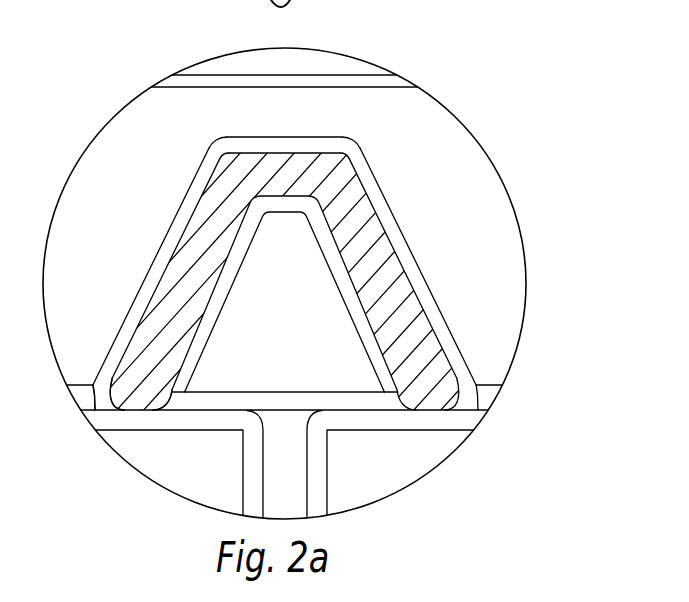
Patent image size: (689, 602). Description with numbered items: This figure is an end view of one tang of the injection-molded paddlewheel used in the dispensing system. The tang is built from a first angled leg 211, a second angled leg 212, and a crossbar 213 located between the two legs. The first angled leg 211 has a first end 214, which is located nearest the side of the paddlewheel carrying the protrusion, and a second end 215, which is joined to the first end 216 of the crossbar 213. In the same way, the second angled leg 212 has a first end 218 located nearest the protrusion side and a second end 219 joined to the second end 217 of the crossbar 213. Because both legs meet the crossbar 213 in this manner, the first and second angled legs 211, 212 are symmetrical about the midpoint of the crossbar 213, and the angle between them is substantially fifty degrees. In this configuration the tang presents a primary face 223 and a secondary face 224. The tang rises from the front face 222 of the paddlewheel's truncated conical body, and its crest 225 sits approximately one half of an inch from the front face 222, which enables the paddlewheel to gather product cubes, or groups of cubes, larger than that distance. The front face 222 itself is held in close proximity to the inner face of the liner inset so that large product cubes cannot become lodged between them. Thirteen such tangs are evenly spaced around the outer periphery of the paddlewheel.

The first angled leg 211 is at (188, 252).
The second angled leg 212 is at (407, 307).
The crossbar 213 is at (280, 165).
The first end of first angled leg 214 is at (137, 404).
The second end of first angled leg 215 is at (210, 208).
The first end of crossbar 216 is at (228, 170).
The second end of crossbar 217 is at (340, 167).
The first end of second angled leg 218 is at (458, 358).
The second end of second angled leg 219 is at (383, 196).
The front face 222 is at (223, 76).
The primary face 223 is at (397, 260).
The secondary face 224 is at (154, 297).
The crest 225 is at (291, 152).